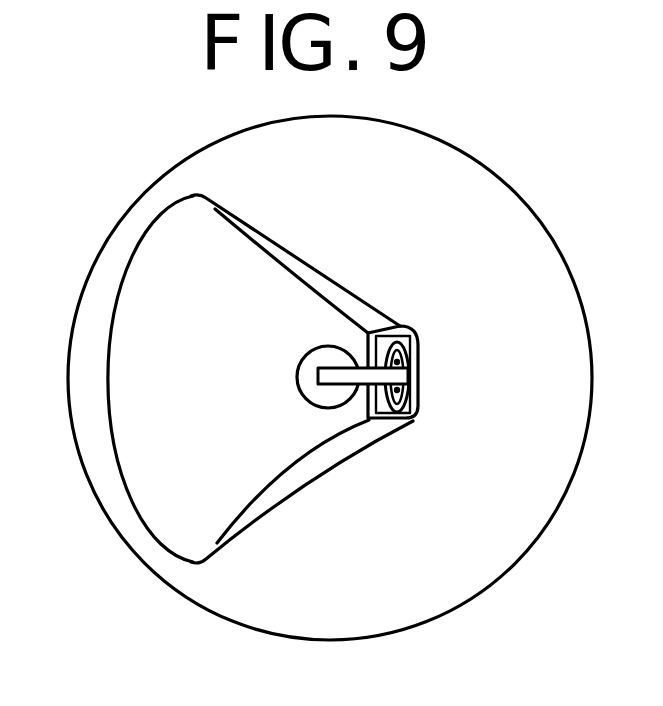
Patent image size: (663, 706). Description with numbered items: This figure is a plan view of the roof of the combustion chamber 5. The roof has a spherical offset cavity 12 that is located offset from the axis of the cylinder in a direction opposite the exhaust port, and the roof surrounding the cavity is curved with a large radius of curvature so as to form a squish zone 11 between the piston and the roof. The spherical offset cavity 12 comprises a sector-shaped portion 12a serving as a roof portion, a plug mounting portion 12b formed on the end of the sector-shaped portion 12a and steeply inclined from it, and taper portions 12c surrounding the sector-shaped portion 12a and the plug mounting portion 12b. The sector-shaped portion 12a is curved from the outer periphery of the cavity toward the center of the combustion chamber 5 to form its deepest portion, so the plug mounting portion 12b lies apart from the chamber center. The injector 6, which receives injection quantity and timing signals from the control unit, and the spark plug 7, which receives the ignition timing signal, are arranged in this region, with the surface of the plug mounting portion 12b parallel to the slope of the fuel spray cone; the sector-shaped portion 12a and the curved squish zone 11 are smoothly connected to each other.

The combustion chamber 5 is at (539, 247).
The injector 6 is at (332, 352).
The spark plug 7 is at (386, 334).
The squish zone 11 is at (478, 497).
The spherical offset cavity 12 is at (250, 437).
The sector-shaped portion 12a is at (142, 488).
The plug mounting portion 12b is at (411, 404).
The taper portions 12c is at (346, 458).